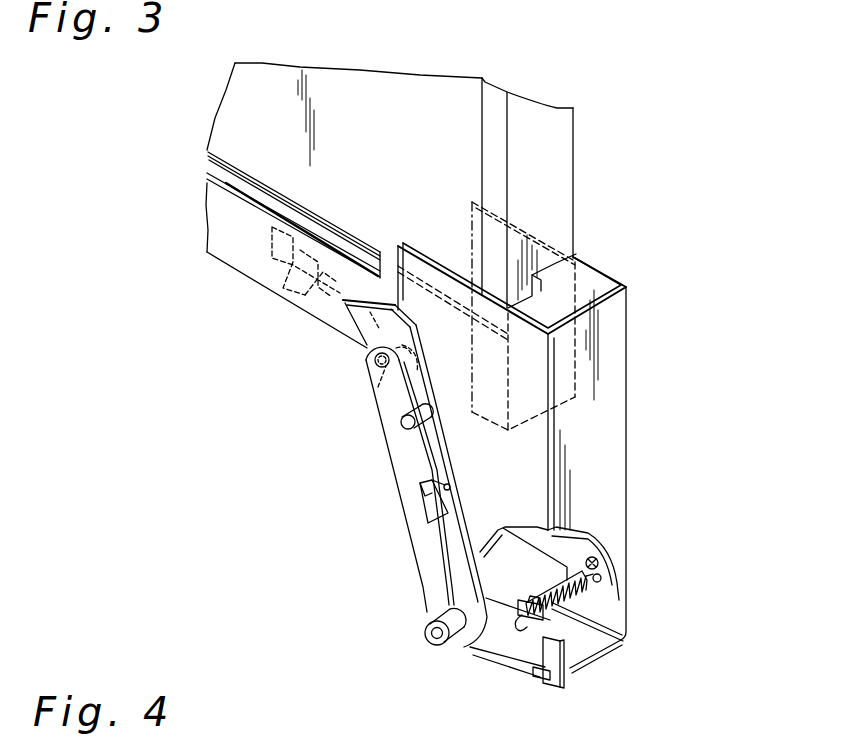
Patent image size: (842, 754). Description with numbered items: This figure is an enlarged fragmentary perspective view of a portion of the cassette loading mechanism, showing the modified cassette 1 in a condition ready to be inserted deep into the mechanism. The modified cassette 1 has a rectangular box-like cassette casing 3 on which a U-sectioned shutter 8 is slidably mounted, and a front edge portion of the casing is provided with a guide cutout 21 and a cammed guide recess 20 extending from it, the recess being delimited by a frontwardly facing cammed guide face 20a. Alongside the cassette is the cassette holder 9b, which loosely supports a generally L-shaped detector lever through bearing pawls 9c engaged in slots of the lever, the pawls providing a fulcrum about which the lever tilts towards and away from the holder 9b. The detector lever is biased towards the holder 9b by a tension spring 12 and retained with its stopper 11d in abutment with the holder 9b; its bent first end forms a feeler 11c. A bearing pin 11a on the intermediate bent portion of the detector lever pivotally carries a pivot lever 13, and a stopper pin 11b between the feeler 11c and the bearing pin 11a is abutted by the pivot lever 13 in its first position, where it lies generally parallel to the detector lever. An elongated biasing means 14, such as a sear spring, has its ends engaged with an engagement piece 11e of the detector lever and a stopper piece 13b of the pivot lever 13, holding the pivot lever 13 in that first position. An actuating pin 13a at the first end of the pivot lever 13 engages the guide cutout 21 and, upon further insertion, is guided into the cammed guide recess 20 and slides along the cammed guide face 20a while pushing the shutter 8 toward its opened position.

The modified cassette 1 is at (578, 132).
The cassette casing 3 is at (560, 178).
The U-sectioned shutter 8 is at (237, 253).
The cassette holder 9b is at (598, 480).
The bearing pawls 9c is at (532, 677).
The bearing pin 11a is at (433, 650).
The stopper pin 11b is at (403, 430).
The feeler 11c is at (353, 315).
The stopper 11d is at (562, 640).
The engagement piece 11e is at (553, 700).
The tension spring 12 is at (623, 642).
The pivot lever 13 is at (390, 436).
The actuating pin 13a is at (366, 373).
The stopper piece 13b is at (423, 510).
The elongated biasing means 14 is at (428, 565).
The cammed guide recess 20 is at (277, 263).
The cammed guide face 20a is at (323, 273).
The guide cutout 21 is at (378, 387).